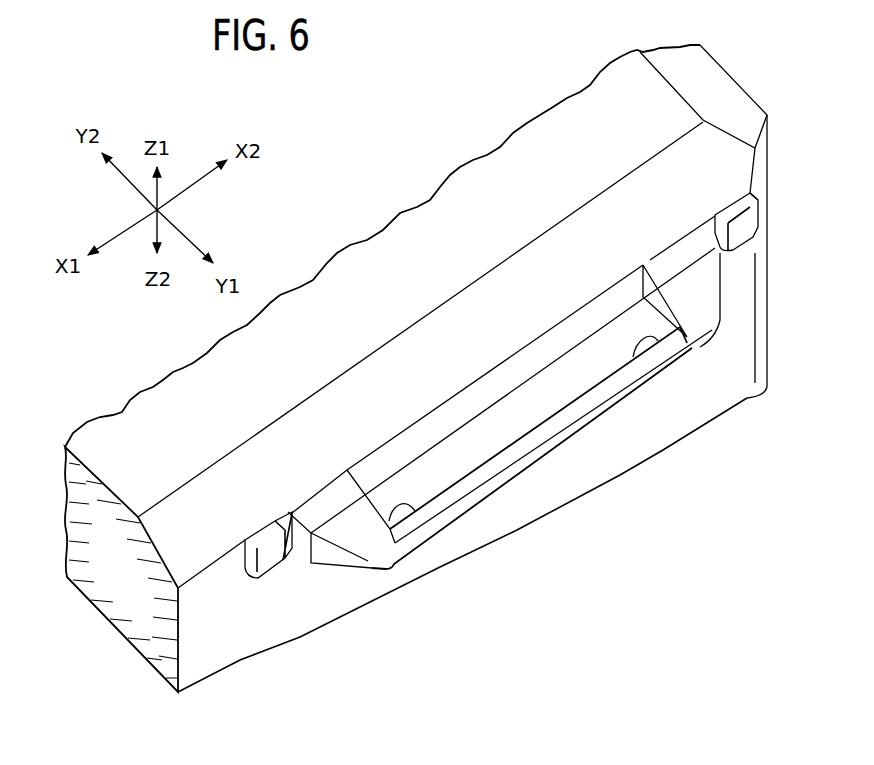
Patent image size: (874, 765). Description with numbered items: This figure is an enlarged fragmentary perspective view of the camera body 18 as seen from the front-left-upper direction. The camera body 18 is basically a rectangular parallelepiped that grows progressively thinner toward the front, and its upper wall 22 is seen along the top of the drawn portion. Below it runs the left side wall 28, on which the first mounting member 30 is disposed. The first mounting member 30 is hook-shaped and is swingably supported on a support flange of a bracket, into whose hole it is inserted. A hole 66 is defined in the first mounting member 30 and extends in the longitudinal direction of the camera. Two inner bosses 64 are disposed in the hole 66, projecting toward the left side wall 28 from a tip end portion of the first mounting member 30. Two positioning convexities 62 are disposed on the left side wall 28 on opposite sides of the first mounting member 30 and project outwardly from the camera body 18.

The camera body 18 is at (416, 368).
The upper wall 22 is at (573, 120).
The left side wall 28 is at (505, 517).
The first mounting member 30 is at (680, 370).
The positioning convexities 62 is at (278, 563).
The inner bosses 64 is at (401, 506).
The hole 66 is at (535, 405).